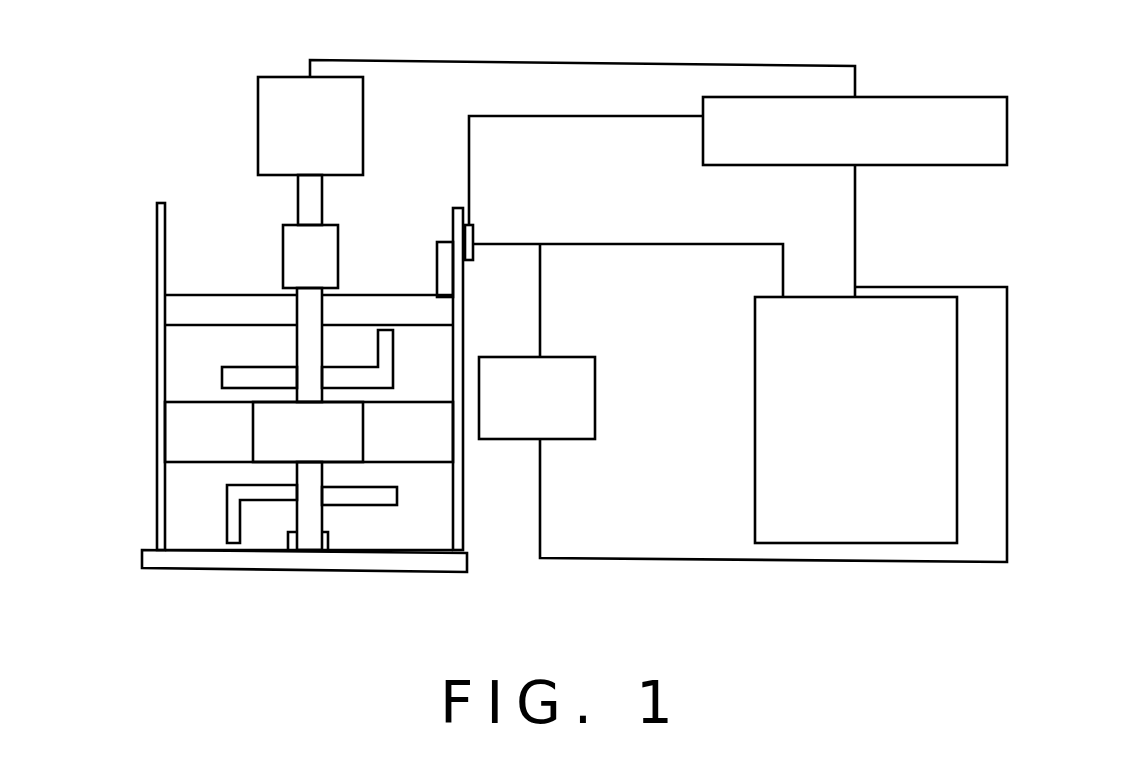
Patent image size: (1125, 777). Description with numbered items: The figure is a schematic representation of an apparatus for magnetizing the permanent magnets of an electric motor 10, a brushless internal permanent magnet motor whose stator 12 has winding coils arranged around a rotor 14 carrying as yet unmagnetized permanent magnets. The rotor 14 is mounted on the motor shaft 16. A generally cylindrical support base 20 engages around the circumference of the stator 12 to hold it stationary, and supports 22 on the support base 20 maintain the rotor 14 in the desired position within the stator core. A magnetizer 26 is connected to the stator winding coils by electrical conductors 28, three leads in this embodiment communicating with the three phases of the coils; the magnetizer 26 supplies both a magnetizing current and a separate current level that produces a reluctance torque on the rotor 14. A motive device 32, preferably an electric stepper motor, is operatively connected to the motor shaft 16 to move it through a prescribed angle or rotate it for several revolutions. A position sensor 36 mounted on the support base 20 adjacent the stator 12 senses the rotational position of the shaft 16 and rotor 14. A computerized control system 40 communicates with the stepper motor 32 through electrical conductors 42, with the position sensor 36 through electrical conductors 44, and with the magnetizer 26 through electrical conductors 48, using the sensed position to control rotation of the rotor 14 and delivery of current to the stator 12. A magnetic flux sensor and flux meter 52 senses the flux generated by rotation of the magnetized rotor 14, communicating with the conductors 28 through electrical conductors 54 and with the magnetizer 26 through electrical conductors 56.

The electric motor 10 is at (205, 350).
The stator 12 is at (183, 427).
The rotor 14 is at (277, 435).
The motor shaft 16 is at (312, 332).
The support base 20 is at (155, 392).
The supports 22 is at (203, 305).
The magnetizer 26 is at (917, 410).
The electrical conductors 28 is at (611, 243).
The motive device 32 is at (283, 90).
The position sensor 36 is at (473, 237).
The computerized control system 40 is at (932, 107).
The electrical conductors 42 is at (497, 57).
The electrical conductors 44 is at (523, 114).
The electrical conductors 48 is at (857, 238).
The magnetic flux sensor and flux meter 52 is at (595, 370).
The electrical conductors 54 is at (541, 287).
The electrical conductors 56 is at (541, 496).